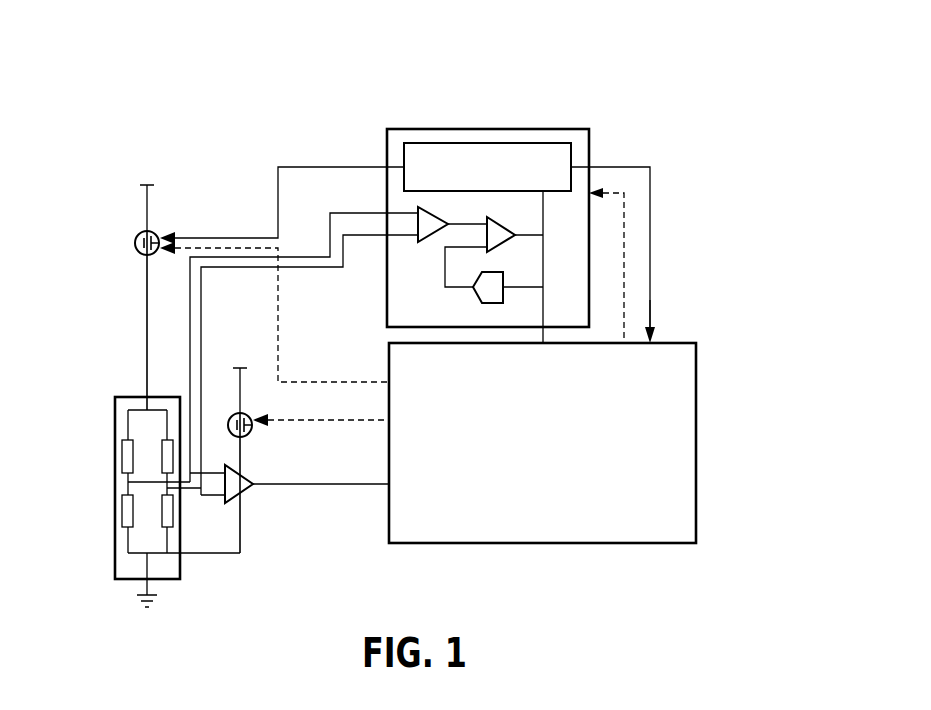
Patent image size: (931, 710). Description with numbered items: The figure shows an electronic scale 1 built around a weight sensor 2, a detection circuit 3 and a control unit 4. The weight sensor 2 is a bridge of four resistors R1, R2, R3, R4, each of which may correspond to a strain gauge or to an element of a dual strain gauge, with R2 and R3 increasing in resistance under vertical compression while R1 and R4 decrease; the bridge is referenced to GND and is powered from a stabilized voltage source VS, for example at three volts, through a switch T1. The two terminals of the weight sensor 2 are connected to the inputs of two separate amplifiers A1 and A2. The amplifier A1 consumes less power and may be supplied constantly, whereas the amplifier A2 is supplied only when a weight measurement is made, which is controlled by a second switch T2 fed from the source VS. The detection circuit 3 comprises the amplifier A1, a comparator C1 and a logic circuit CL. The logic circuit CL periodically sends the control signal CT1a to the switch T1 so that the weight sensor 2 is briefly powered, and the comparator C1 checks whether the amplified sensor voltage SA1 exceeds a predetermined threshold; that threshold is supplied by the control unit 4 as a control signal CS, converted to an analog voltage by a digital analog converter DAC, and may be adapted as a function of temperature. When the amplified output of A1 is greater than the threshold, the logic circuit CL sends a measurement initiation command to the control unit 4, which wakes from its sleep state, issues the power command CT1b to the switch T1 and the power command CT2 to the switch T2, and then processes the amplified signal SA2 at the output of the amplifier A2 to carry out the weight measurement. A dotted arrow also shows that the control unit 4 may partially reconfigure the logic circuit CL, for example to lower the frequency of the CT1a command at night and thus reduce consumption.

The electronic scale 1 is at (208, 99).
The weight sensor 2 is at (133, 397).
The detection circuit 3 is at (422, 128).
The control unit 4 is at (696, 401).
The logic circuit CL is at (487, 167).
The amplifier A1 is at (307, 351).
The comparator C1 is at (515, 267).
The digital analog converter DAC is at (485, 286).
The amplifier A2 is at (242, 490).
The switch T1 is at (159, 306).
The switch T2 is at (252, 468).
The resistor R1 is at (128, 456).
The resistor R2 is at (165, 448).
The resistor R3 is at (128, 513).
The resistor R4 is at (165, 517).
The stabilized voltage source VS is at (191, 285).
The ground GND is at (147, 595).
The control signal CT1a is at (278, 190).
The power command CT1b is at (278, 325).
The power command CT2 is at (333, 423).
The first sensor output signal SA1 is at (543, 215).
The amplified signal SA2 is at (357, 486).
The control signal CS is at (543, 302).